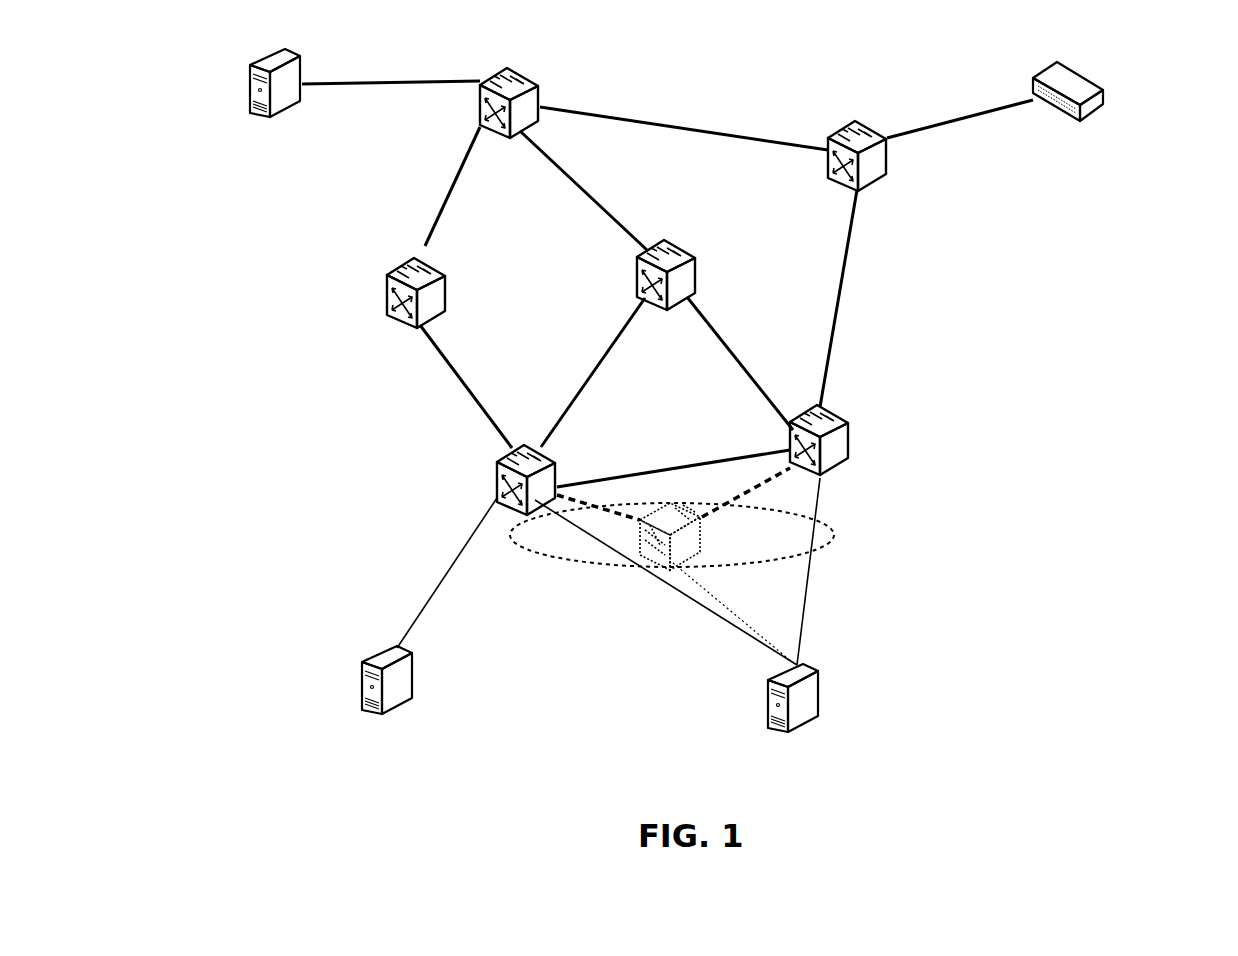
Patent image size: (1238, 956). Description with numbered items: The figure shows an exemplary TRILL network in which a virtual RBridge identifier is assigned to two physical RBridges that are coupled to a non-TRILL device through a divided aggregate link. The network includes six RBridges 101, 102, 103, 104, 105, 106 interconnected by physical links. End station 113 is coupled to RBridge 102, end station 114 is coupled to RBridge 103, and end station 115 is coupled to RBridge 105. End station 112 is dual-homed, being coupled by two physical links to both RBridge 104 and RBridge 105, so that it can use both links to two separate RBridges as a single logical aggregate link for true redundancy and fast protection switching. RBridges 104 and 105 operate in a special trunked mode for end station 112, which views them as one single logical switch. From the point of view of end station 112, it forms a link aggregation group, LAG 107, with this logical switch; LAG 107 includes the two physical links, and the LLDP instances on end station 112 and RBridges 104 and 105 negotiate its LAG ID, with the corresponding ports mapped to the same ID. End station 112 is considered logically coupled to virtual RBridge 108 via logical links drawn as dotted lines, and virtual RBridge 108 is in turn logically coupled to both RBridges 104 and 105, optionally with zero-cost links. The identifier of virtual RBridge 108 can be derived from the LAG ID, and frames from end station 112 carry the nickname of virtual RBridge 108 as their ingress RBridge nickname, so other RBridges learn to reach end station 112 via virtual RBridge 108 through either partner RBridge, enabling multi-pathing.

The RBridge 101 is at (472, 290).
The RBridge 102 is at (541, 88).
The RBridge 103 is at (888, 172).
The RBridge 104 is at (850, 443).
The RBridge 105 is at (558, 468).
The RBridge 106 is at (722, 262).
The LAG 107 is at (835, 531).
The virtual RBridge 108 is at (701, 547).
The end station 112 is at (820, 718).
The end station 113 is at (280, 120).
The end station 114 is at (1128, 124).
The end station 115 is at (362, 705).